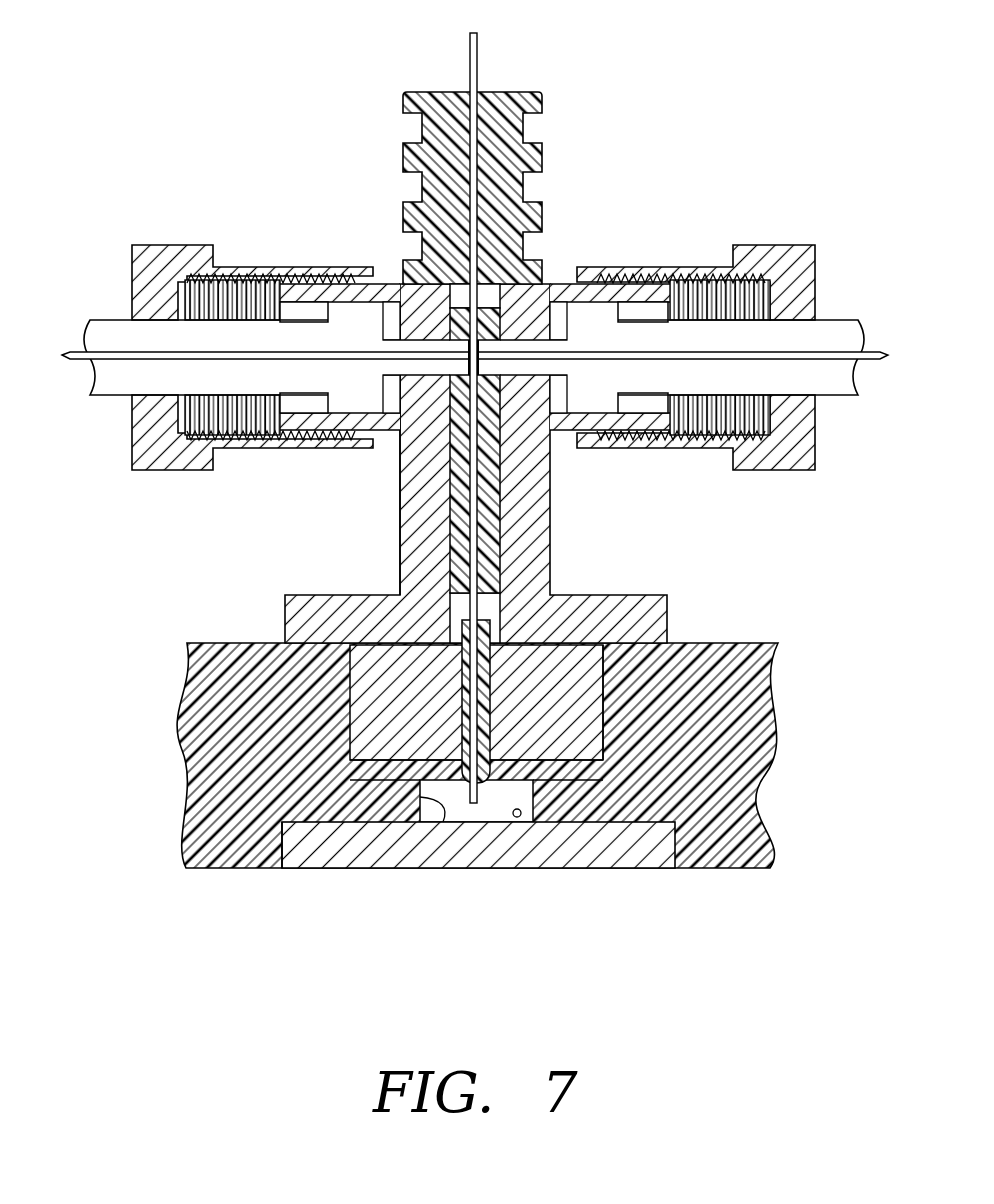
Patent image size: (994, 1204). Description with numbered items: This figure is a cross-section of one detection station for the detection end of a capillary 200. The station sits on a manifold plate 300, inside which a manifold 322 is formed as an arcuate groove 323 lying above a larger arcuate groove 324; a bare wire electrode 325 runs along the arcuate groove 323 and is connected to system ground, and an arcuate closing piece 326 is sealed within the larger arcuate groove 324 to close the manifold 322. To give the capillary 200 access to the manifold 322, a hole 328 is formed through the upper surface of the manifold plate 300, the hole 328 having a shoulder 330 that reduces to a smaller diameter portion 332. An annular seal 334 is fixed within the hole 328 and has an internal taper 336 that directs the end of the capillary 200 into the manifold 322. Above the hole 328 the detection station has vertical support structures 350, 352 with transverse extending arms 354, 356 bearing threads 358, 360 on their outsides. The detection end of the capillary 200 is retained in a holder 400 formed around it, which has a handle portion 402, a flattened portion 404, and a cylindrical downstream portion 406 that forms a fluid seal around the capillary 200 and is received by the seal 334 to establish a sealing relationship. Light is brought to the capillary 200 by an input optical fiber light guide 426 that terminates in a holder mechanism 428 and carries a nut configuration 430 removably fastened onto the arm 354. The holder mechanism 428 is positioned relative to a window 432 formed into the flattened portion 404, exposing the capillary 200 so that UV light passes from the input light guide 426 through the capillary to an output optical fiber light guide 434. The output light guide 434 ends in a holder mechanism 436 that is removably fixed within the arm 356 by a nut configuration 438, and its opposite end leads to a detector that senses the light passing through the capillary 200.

The capillary 200 is at (477, 50).
The manifold plate 300 is at (757, 643).
The manifold 322 is at (420, 806).
The arcuate groove 323 is at (440, 822).
The larger arcuate groove 324 is at (672, 852).
The bare wire electrode 325 is at (515, 818).
The arcuate closing piece 326 is at (328, 866).
The hole 328 is at (597, 705).
The shoulder 330 is at (367, 757).
The smaller diameter portion 332 is at (462, 742).
The annular seal 334 is at (601, 692).
The internal taper 336 is at (520, 628).
The vertical support structure 350 is at (550, 512).
The vertical support structure 352 is at (400, 512).
The transverse extending arm 354 is at (560, 278).
The transverse extending arm 356 is at (390, 285).
The threads 358 is at (640, 440).
The threads 360 is at (313, 440).
The holder 400 is at (470, 421).
The handle portion 402 is at (543, 160).
The flattened portion 404 is at (452, 553).
The cylindrical downstream portion 406 is at (462, 672).
The input optical fiber light guide 426 is at (880, 350).
The holder mechanism 428 is at (602, 322).
The nut configuration 430 is at (815, 270).
The window 432 is at (482, 350).
The output optical fiber light guide 434 is at (62, 354).
The holder mechanism 436 is at (345, 325).
The nut configuration 438 is at (132, 438).